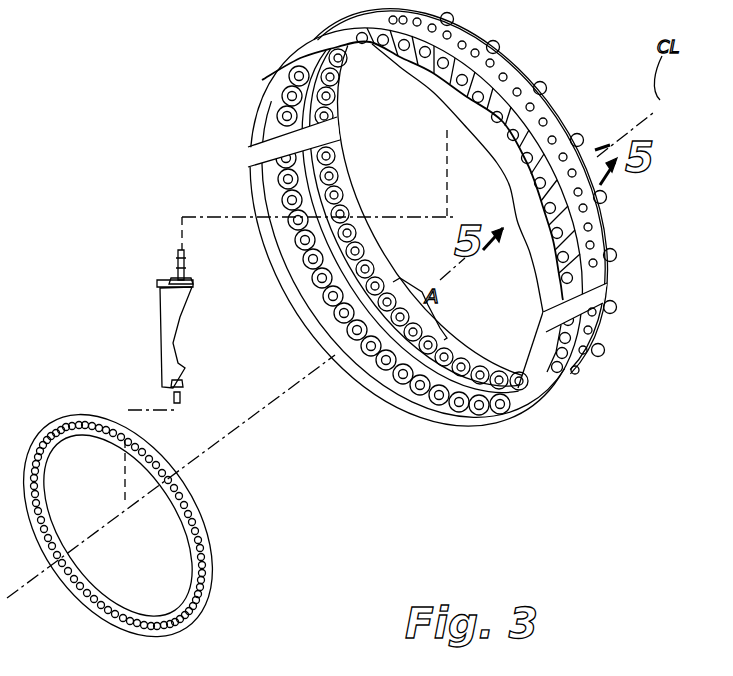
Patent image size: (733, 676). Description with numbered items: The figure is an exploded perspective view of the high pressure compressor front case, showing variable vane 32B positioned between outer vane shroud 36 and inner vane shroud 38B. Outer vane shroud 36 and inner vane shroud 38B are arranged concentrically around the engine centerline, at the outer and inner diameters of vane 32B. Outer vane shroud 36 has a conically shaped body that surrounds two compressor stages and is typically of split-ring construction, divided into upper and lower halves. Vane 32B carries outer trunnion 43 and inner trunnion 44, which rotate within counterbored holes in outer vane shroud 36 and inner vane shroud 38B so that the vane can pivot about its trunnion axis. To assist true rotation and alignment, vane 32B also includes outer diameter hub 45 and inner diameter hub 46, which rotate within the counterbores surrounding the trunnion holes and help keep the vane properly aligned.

The outer vane shroud 36 is at (497, 55).
The variable vane 32B is at (167, 305).
The outer trunnion 43 is at (180, 260).
The outer diameter hub 45 is at (190, 283).
The inner trunnion 44 is at (187, 383).
The inner diameter hub 46 is at (177, 397).
The inner vane shroud 38B is at (213, 548).